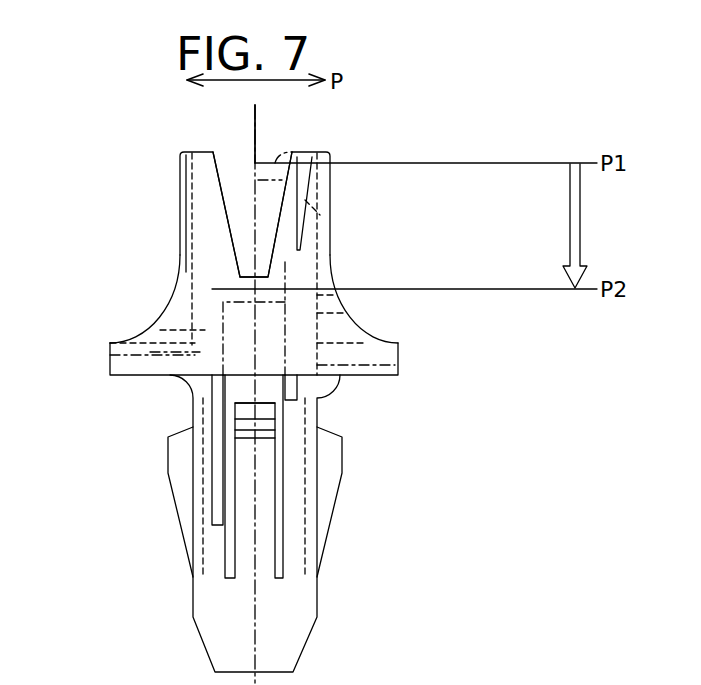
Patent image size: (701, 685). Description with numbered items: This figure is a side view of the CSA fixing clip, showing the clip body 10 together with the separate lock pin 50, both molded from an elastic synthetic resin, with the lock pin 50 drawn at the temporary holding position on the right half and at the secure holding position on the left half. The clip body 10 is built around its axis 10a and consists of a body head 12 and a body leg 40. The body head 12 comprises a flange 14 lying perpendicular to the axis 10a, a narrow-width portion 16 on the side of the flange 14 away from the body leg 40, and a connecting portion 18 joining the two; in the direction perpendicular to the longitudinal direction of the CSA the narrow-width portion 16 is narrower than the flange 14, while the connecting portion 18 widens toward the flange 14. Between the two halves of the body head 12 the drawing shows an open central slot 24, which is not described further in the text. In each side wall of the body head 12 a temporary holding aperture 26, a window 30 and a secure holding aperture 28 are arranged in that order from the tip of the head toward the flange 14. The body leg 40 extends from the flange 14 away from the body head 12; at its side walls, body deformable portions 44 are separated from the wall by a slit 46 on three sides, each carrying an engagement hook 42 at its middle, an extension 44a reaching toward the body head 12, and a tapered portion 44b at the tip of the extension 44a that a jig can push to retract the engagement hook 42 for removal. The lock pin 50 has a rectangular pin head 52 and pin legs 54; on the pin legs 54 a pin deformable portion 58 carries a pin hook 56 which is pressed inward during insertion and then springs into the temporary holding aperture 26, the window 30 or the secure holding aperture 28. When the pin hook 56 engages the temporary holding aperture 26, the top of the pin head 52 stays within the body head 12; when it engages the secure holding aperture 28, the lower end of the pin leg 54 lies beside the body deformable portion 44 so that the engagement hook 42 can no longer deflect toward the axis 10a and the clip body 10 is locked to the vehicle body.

The clip body 10 is at (180, 151).
The axis of the clip body 10a is at (262, 120).
The body head 12 is at (333, 165).
The flange 14 is at (400, 361).
The narrow-width portion 16 is at (180, 178).
The connecting portion 18 is at (345, 315).
The contact receiving slot 24 is at (238, 233).
The temporary holding aperture 26 is at (185, 208).
The secure holding aperture 28 is at (150, 325).
The window 30 is at (180, 295).
The body leg 40 is at (300, 594).
The engagement hook 42 is at (168, 455).
The body deformable portion 44 is at (265, 507).
The extension 44a is at (238, 404).
The tapered portion 44b is at (245, 415).
The slit 46 is at (300, 490).
The lock pin 50 is at (275, 162).
The pin head 52 is at (262, 180).
The pin leg 54 is at (205, 520).
The pin hook 56 is at (165, 325).
The pin deformable portion 58 is at (165, 350).